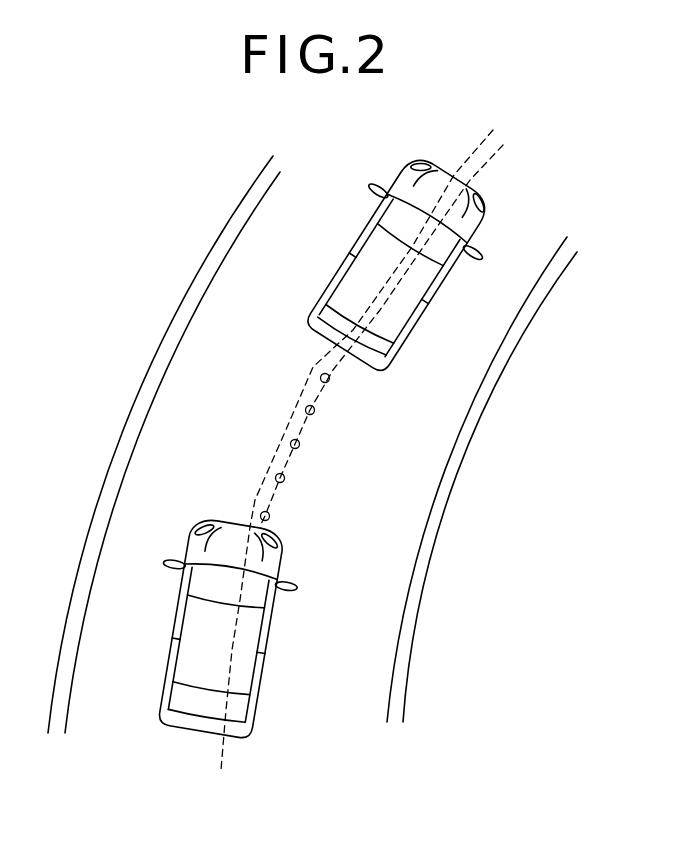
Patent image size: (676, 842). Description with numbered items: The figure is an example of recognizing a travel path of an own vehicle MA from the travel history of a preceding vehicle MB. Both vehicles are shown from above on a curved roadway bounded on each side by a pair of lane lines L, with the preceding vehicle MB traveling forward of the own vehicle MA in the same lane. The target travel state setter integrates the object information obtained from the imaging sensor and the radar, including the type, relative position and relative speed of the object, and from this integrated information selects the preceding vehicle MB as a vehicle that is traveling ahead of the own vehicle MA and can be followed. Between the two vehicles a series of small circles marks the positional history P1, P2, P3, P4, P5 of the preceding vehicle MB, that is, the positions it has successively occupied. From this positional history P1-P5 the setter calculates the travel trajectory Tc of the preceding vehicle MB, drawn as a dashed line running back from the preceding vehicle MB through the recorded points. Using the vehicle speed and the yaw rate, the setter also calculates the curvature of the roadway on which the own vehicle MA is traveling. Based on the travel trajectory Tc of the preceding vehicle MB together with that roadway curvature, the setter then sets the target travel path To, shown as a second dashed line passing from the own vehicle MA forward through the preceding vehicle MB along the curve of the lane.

The own vehicle MA is at (163, 706).
The preceding vehicle MB is at (403, 177).
The lane line L is at (151, 364).
The target travel path To is at (485, 141).
The travel trajectory Tc is at (497, 156).
The positional history P1 is at (330, 379).
The positional history P2 is at (315, 411).
The positional history P3 is at (300, 445).
The positional history P4 is at (285, 479).
The positional history P5 is at (270, 517).